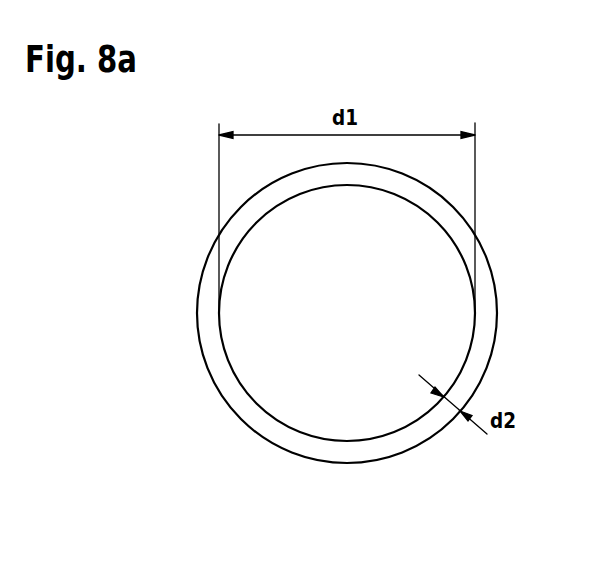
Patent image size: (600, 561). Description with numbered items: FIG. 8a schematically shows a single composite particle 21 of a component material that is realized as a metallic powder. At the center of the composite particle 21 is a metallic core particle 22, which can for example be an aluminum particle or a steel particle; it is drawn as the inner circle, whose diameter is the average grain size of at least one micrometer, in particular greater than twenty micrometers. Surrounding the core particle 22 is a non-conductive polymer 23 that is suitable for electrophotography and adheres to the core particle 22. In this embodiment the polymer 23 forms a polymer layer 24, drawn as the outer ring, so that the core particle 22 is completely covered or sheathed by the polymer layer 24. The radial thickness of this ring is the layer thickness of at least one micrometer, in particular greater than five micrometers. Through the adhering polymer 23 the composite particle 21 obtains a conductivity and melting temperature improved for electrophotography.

The composite particle 21 is at (296, 348).
The core particle 22 is at (328, 423).
The polymer 23 is at (296, 313).
The polymer layer 24 is at (212, 353).